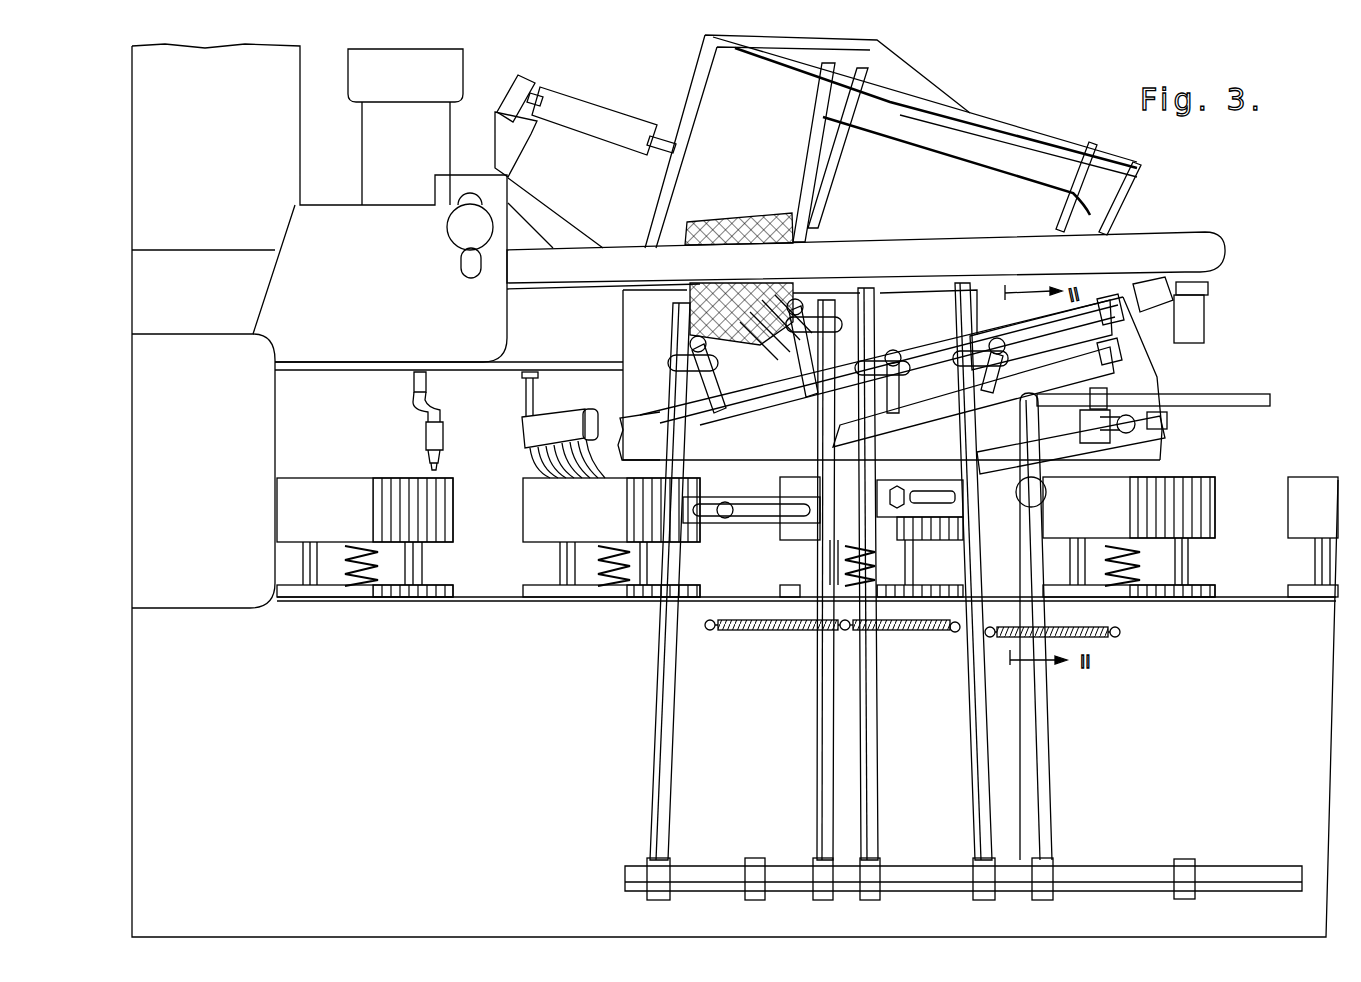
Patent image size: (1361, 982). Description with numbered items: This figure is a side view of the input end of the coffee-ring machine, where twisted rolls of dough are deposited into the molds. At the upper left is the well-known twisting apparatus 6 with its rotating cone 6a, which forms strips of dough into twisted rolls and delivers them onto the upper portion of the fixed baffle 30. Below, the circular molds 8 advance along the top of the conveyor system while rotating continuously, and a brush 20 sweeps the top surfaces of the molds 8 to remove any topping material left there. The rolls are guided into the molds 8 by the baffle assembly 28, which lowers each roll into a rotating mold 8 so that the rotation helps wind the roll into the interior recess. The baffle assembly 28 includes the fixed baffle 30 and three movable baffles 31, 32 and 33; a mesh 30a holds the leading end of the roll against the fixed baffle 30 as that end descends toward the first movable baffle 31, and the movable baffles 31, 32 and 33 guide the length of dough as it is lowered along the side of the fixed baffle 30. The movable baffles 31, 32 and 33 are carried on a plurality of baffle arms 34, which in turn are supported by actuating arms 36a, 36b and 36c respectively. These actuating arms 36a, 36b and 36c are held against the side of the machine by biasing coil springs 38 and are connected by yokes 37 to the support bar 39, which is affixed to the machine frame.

The twisting apparatus 6 is at (678, 77).
The cone 6a is at (982, 182).
The circular molds 8 is at (530, 533).
The brush 20 is at (530, 427).
The baffle assembly 28 is at (1272, 340).
The fixed baffle 30 is at (632, 313).
The mesh 30a is at (763, 199).
The movable baffle 31 is at (620, 430).
The movable baffle 32 is at (1145, 363).
The movable baffle 33 is at (1162, 449).
The baffle arms 34 is at (817, 377).
The actuating arm 36a is at (660, 698).
The actuating arm 36b is at (972, 712).
The actuating arm 36c is at (1045, 727).
The yokes 37 is at (812, 858).
The biasing coil springs 38 is at (760, 633).
The support bar 39 is at (1118, 872).